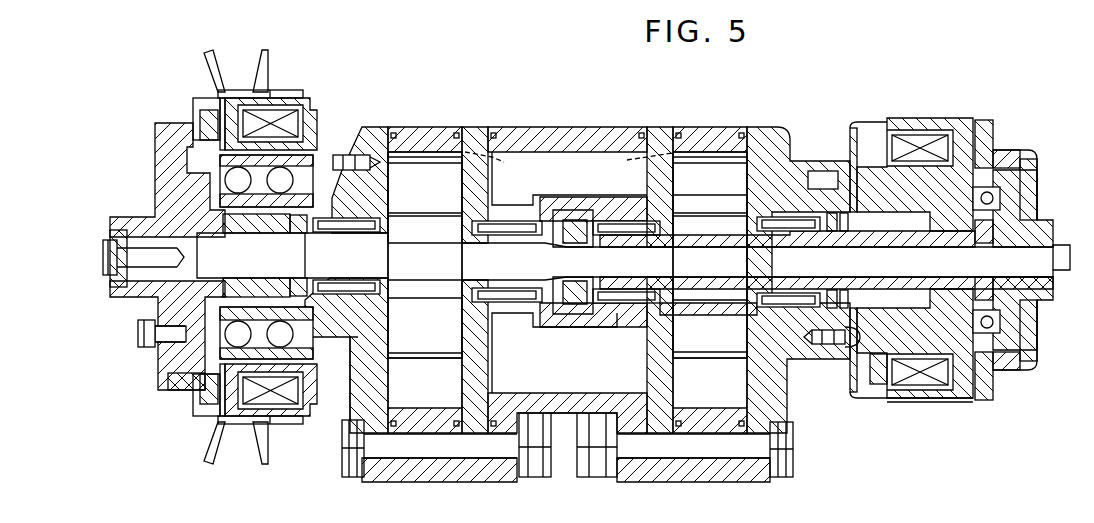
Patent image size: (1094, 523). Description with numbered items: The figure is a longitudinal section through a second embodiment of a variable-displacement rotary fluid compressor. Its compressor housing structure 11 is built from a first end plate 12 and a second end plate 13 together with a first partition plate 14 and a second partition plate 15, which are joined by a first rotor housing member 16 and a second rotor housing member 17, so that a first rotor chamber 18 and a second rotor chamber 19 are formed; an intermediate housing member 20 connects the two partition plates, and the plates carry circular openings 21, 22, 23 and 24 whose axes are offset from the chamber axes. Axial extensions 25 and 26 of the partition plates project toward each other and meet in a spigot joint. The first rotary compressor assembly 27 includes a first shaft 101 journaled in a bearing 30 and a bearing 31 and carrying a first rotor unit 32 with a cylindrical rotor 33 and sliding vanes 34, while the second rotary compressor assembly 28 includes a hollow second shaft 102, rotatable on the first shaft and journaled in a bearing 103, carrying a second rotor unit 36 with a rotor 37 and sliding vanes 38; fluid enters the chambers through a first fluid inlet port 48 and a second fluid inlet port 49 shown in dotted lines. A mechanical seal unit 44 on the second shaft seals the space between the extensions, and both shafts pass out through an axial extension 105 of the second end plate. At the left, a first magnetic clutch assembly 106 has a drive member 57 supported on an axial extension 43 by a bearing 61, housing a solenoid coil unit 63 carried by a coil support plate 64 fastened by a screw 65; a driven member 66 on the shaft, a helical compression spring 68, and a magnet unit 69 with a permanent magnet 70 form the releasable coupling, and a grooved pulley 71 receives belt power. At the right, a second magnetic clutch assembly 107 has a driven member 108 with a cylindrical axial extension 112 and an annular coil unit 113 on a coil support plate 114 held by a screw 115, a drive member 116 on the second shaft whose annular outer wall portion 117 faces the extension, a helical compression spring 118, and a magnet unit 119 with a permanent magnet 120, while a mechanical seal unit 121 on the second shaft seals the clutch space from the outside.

The compressor housing structure 11 is at (566, 417).
The first end plate 12 is at (376, 126).
The second end plate 13 is at (779, 126).
The first partition plate 14 is at (476, 126).
The second partition plate 15 is at (660, 126).
The first rotor housing member 16 is at (437, 126).
The second rotor housing member 17 is at (731, 126).
The first rotor chamber 18 is at (390, 381).
The second rotor chamber 19 is at (679, 381).
The intermediate housing member 20 is at (600, 126).
The circular opening 21 is at (378, 320).
The circular opening 22 is at (796, 306).
The circular opening 23 is at (502, 304).
The circular opening 24 is at (633, 304).
The axial extension 25 is at (558, 198).
The axial extension 26 is at (630, 205).
The first rotary compressor assembly 27 is at (420, 103).
The second rotary compressor assembly 28 is at (700, 108).
The bearing 30 is at (362, 238).
The bearing 31 is at (505, 237).
The first rotor unit 32 is at (438, 362).
The cylindrical rotor 33 is at (413, 294).
The sliding vanes 34 is at (426, 222).
The second rotor unit 36 is at (723, 362).
The cylindrical rotor 37 is at (692, 322).
The sliding vanes 38 is at (723, 196).
The axial extension 43 is at (292, 211).
The mechanical seal unit 44 is at (576, 306).
The first fluid inlet port 48 is at (497, 162).
The second fluid inlet port 49 is at (637, 162).
The drive member 57 is at (287, 96).
The bearing 61 is at (308, 333).
The annular solenoid coil unit 63 is at (288, 106).
The coil support plate 64 is at (329, 380).
The screw 65 is at (344, 152).
The driven member 66 is at (155, 216).
The helical compression spring 68 is at (177, 392).
The annular magnet unit 69 is at (208, 90).
The annular permanent magnet 70 is at (193, 108).
The circumferentially grooved pulley 71 is at (215, 68).
The first shaft 101 is at (728, 268).
The hollow second shaft 102 is at (703, 278).
The bearing 103 is at (776, 216).
The axial extension 105 is at (903, 318).
The first magnetic clutch assembly 106 is at (347, 73).
The second magnetic clutch assembly 107 is at (906, 102).
The driven member 108 is at (963, 120).
The cylindrical axial extension 112 is at (1003, 153).
The annular coil unit 113 is at (922, 130).
The coil support plate 114 is at (869, 364).
The screw 115 is at (828, 348).
The drive member 116 is at (1046, 303).
The annular outer wall portion 117 is at (1037, 358).
The helical compression spring 118 is at (1018, 373).
The annular magnet unit 119 is at (968, 402).
The permanent magnet 120 is at (993, 388).
The mechanical seal unit 121 is at (847, 210).